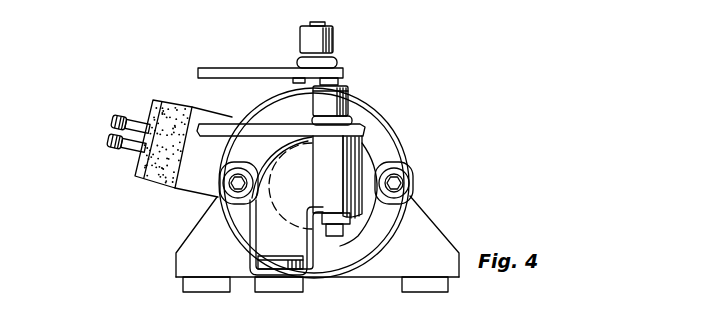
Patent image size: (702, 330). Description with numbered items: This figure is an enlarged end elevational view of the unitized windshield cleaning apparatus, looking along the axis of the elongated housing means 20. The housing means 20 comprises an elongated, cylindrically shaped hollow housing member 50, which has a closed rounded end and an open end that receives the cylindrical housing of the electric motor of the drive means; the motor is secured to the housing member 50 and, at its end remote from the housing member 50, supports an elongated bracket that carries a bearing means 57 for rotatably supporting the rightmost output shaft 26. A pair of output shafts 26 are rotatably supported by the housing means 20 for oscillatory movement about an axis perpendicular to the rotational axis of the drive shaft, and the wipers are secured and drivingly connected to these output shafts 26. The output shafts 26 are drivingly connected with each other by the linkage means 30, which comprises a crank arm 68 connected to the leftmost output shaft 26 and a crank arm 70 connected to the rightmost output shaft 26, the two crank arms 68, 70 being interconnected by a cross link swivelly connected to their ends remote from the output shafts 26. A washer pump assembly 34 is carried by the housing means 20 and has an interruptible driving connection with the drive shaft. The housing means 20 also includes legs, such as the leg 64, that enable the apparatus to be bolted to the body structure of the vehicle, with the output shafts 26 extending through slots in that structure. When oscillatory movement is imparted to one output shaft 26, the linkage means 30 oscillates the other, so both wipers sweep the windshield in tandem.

The housing means 20 is at (420, 164).
The output shafts 26 is at (333, 45).
The linkage means 30 is at (236, 67).
The washer pump assembly 34 is at (100, 129).
The housing member 50 is at (362, 262).
The bearing means 57 is at (352, 150).
The leg 64 is at (249, 266).
The crank arm 68 is at (268, 69).
The crank arm 70 is at (218, 130).